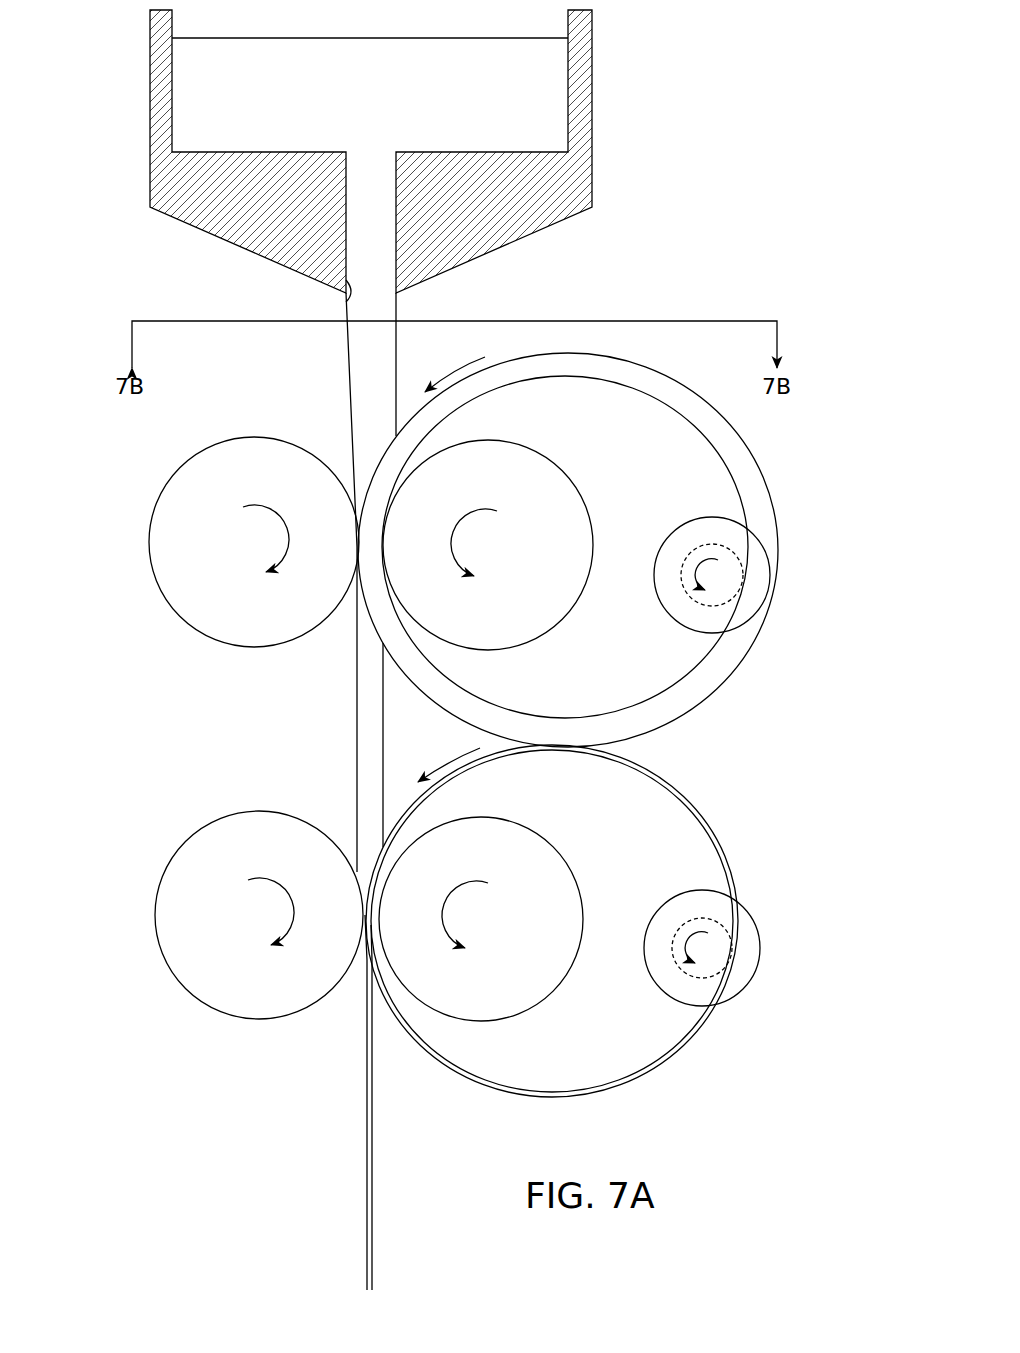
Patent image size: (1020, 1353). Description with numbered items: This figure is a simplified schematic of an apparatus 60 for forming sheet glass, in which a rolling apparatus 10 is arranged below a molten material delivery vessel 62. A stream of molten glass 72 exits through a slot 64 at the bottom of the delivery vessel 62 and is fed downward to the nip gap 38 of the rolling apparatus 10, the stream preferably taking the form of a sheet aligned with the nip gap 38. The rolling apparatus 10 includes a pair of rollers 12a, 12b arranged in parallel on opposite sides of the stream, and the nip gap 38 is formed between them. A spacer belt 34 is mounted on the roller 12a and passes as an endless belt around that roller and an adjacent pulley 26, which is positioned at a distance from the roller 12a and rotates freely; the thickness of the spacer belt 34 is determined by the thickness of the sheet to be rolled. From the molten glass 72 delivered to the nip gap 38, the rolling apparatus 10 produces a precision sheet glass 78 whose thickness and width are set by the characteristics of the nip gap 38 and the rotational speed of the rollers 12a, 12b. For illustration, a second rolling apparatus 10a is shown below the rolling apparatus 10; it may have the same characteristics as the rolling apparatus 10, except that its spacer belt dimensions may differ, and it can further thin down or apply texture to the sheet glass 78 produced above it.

The apparatus for forming a sheet glass 60 is at (446, 166).
The molten material delivery vessel 62 is at (592, 48).
The slot 64 is at (347, 290).
The rolling apparatus 10 is at (481, 499).
The rolling apparatus 10a is at (722, 823).
The roller 12a is at (572, 610).
The roller 12b is at (218, 647).
The pulley 26 is at (690, 535).
The spacer belt 34 is at (742, 655).
The nip gap 38 is at (357, 505).
The stream of molten glass 72 is at (358, 388).
The precision sheet glass 78 is at (362, 720).